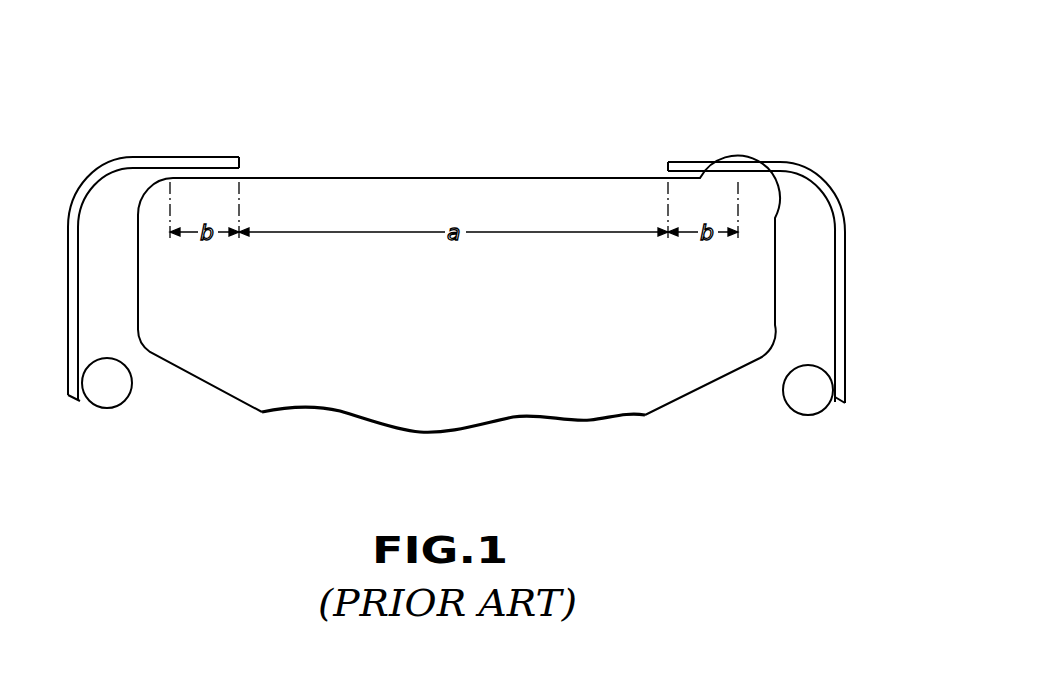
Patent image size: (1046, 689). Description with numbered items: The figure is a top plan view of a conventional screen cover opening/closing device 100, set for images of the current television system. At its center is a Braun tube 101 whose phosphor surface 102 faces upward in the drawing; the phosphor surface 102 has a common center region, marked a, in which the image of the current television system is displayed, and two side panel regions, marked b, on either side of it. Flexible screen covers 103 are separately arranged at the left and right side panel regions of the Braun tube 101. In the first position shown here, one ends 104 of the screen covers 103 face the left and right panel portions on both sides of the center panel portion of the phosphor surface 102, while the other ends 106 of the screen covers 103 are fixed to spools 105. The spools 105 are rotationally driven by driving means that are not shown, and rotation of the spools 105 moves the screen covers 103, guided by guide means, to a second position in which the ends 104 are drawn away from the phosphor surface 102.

The screen cover opening/closing device 100 is at (457, 259).
The Braun tube 101 is at (533, 394).
The phosphor surface 102 is at (487, 178).
The flexible screen cover 103 is at (70, 293).
The one end of screen cover 104 is at (212, 165).
The spool 105 is at (117, 398).
The other end of screen cover 106 is at (71, 402).